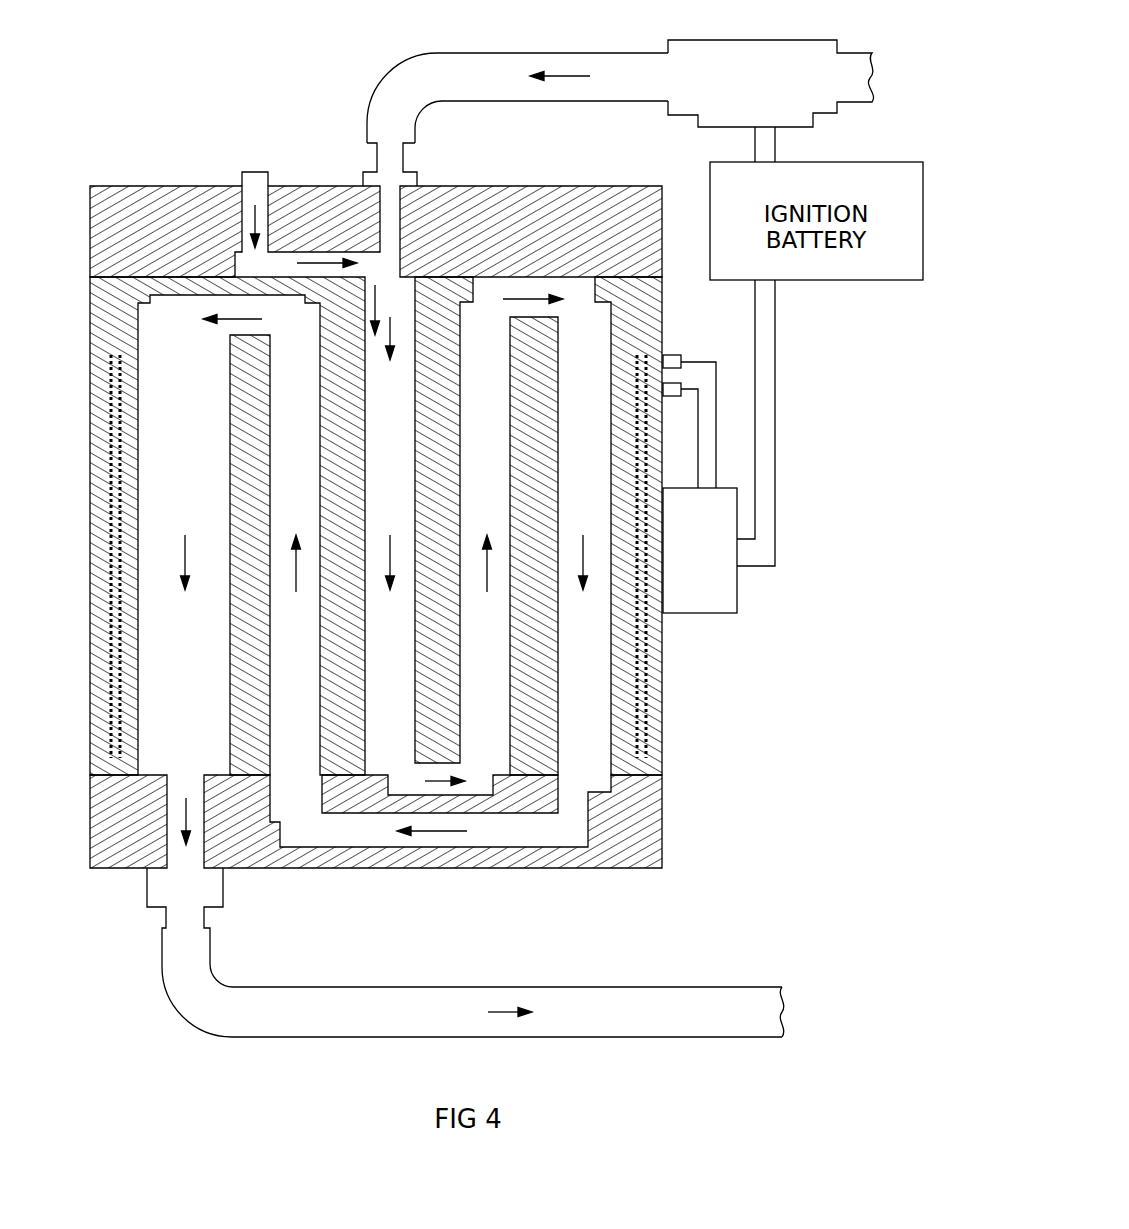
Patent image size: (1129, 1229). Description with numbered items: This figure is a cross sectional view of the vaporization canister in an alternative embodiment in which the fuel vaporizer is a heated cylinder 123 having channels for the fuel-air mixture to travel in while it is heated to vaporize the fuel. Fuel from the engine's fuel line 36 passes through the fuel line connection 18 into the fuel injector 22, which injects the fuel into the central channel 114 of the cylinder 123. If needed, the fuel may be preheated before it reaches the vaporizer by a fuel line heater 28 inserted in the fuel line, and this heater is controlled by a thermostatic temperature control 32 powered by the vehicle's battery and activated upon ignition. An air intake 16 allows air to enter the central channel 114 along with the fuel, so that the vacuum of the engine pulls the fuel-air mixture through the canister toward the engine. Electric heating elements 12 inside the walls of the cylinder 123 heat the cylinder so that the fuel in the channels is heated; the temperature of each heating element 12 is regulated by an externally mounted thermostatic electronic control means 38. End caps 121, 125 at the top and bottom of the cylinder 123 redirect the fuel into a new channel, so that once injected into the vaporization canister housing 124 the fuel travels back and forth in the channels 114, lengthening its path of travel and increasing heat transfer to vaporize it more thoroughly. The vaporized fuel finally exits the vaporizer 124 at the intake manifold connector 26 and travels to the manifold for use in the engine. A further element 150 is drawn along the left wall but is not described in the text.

The heating element 12 is at (638, 358).
The air intake 16 is at (251, 178).
The fuel line connection 18 is at (403, 157).
The fuel injector 22 is at (365, 178).
The intake manifold connector 26 is at (225, 885).
The fuel line heater 28 is at (738, 95).
The thermostatic temperature control 32 is at (722, 128).
The fuel line 36 is at (467, 91).
The thermostatic electronic control means 38 is at (689, 565).
The central channel 114 is at (166, 700).
The end cap 121 is at (518, 248).
The heated cylinder 123 is at (663, 708).
The vaporizer 124 is at (833, 848).
The end cap 125 is at (607, 843).
The heating element 150 is at (183, 548).